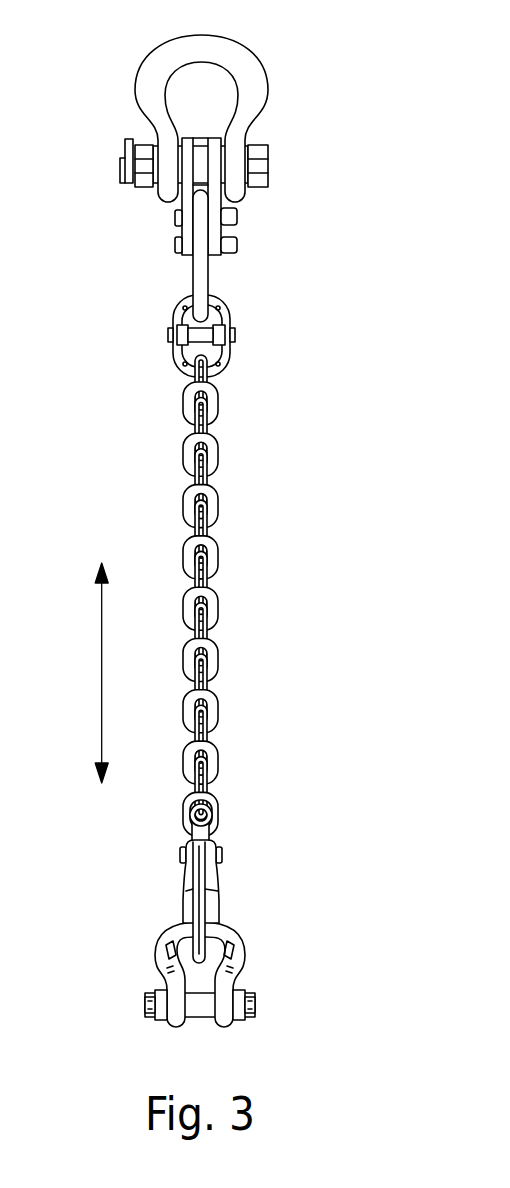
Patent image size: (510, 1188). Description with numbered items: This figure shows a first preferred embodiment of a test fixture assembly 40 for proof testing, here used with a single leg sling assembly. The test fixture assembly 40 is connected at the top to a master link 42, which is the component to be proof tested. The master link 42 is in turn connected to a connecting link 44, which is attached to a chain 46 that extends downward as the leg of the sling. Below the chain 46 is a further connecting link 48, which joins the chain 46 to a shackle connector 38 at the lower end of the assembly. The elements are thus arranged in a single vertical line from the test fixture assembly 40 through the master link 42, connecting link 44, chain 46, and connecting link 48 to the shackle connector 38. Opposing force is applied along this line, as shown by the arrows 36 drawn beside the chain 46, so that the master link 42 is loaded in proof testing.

The test fixture assembly 40 is at (229, 528).
The master link 42 is at (200, 268).
The connecting link 44 is at (220, 350).
The chain 46 is at (210, 553).
The connecting link 48 is at (210, 905).
The shackle connector 38 is at (238, 962).
The arrows 36 is at (101, 677).